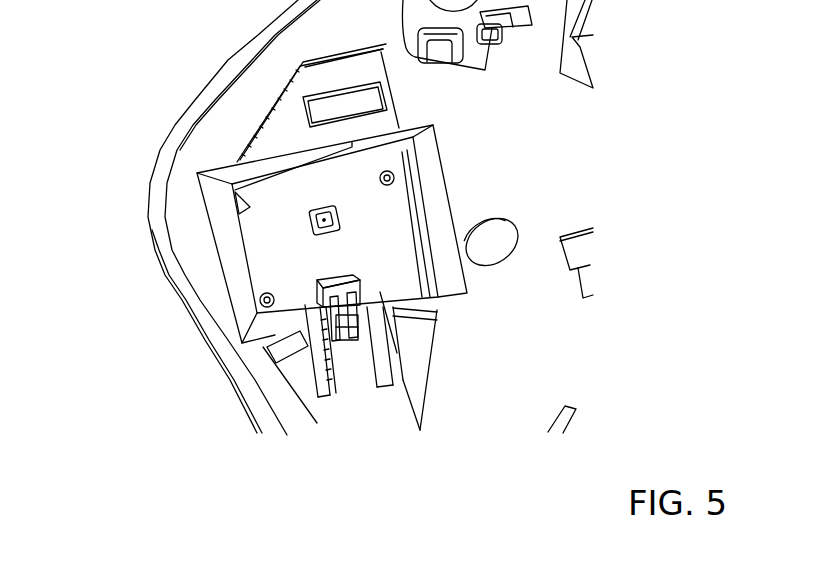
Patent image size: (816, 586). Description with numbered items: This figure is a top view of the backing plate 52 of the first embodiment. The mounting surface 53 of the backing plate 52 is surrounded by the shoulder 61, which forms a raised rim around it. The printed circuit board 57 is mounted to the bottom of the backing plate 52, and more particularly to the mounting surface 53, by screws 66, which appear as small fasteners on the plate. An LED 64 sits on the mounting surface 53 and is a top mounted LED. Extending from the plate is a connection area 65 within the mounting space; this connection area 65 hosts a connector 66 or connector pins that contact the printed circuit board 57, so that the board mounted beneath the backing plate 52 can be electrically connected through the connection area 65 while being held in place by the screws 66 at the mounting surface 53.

The backing plate 52 is at (565, 141).
The mounting surface 53 is at (250, 230).
The printed circuit board 57 is at (407, 230).
The shoulder 61 is at (443, 277).
The LED 64 is at (320, 232).
The connection area 65 is at (347, 370).
The screws 66 is at (389, 174).